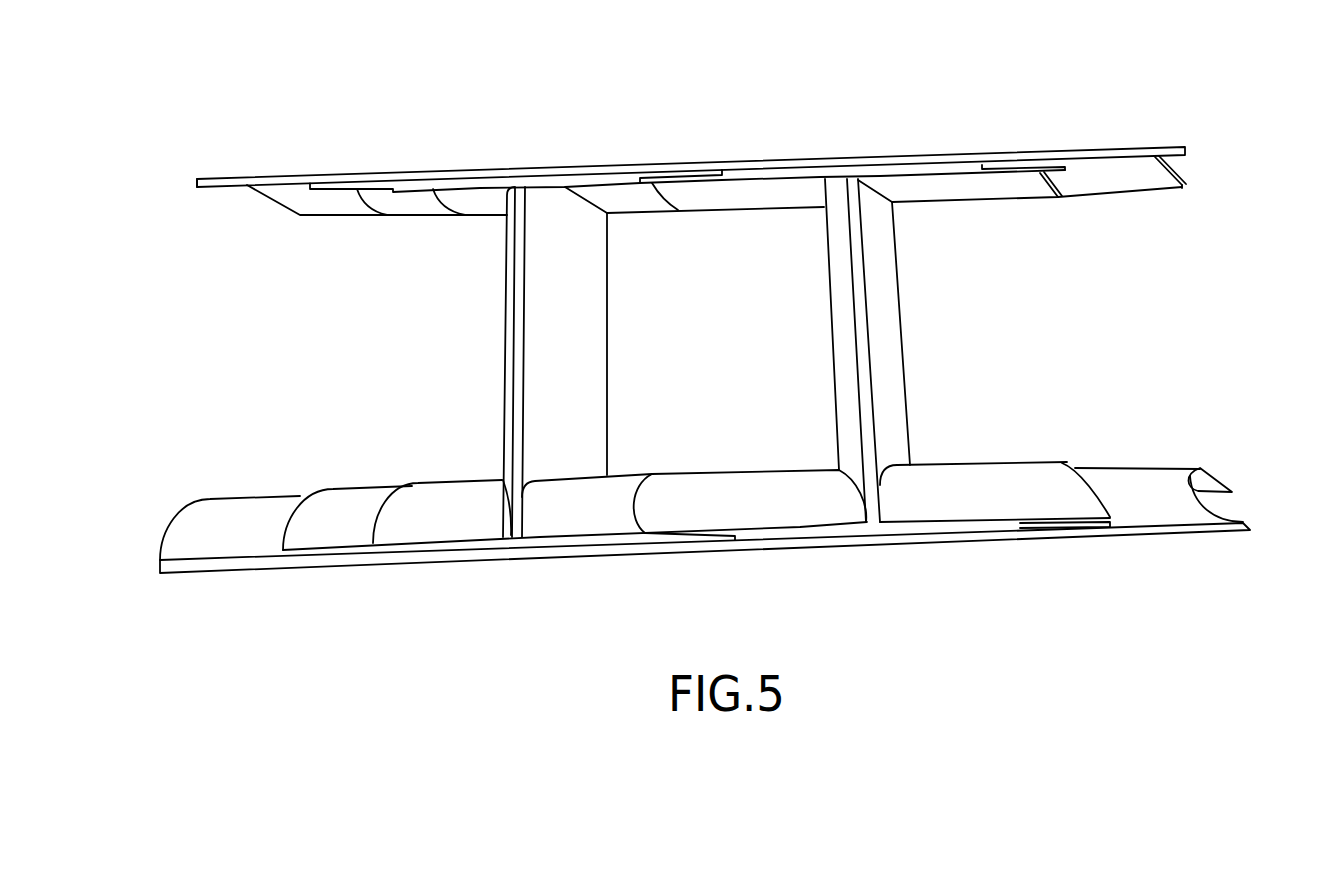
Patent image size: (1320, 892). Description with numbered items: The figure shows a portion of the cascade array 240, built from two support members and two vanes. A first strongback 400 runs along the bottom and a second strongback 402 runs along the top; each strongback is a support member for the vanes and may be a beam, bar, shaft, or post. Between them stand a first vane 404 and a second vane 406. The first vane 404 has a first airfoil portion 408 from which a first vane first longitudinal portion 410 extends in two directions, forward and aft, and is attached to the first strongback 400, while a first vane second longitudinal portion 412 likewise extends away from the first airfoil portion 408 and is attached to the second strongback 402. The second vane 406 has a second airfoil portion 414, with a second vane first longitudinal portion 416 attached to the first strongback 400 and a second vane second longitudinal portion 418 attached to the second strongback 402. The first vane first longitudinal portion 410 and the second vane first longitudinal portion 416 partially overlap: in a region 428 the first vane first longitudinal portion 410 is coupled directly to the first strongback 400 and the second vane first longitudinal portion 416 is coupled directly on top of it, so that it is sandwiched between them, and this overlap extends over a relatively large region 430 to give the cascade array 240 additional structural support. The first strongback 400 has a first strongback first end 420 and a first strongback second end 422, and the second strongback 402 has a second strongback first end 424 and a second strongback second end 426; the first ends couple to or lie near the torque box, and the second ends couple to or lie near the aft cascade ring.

The cascade array 240 is at (568, 110).
The first strongback 400 is at (1227, 528).
The second strongback 402 is at (1180, 177).
The first vane 404 is at (607, 338).
The second vane 406 is at (899, 325).
The first airfoil portion 408 is at (607, 418).
The first vane first longitudinal portion 410 is at (462, 523).
The first vane second longitudinal portion 412 is at (483, 195).
The second airfoil portion 414 is at (903, 392).
The second vane first longitudinal portion 416 is at (973, 502).
The second vane second longitudinal portion 418 is at (935, 187).
The first strongback first end 420 is at (172, 528).
The first strongback second end 422 is at (1200, 468).
The second strongback first end 424 is at (197, 182).
The second strongback second end 426 is at (1187, 185).
The region 428 is at (735, 574).
The overlap region 430 is at (1003, 605).